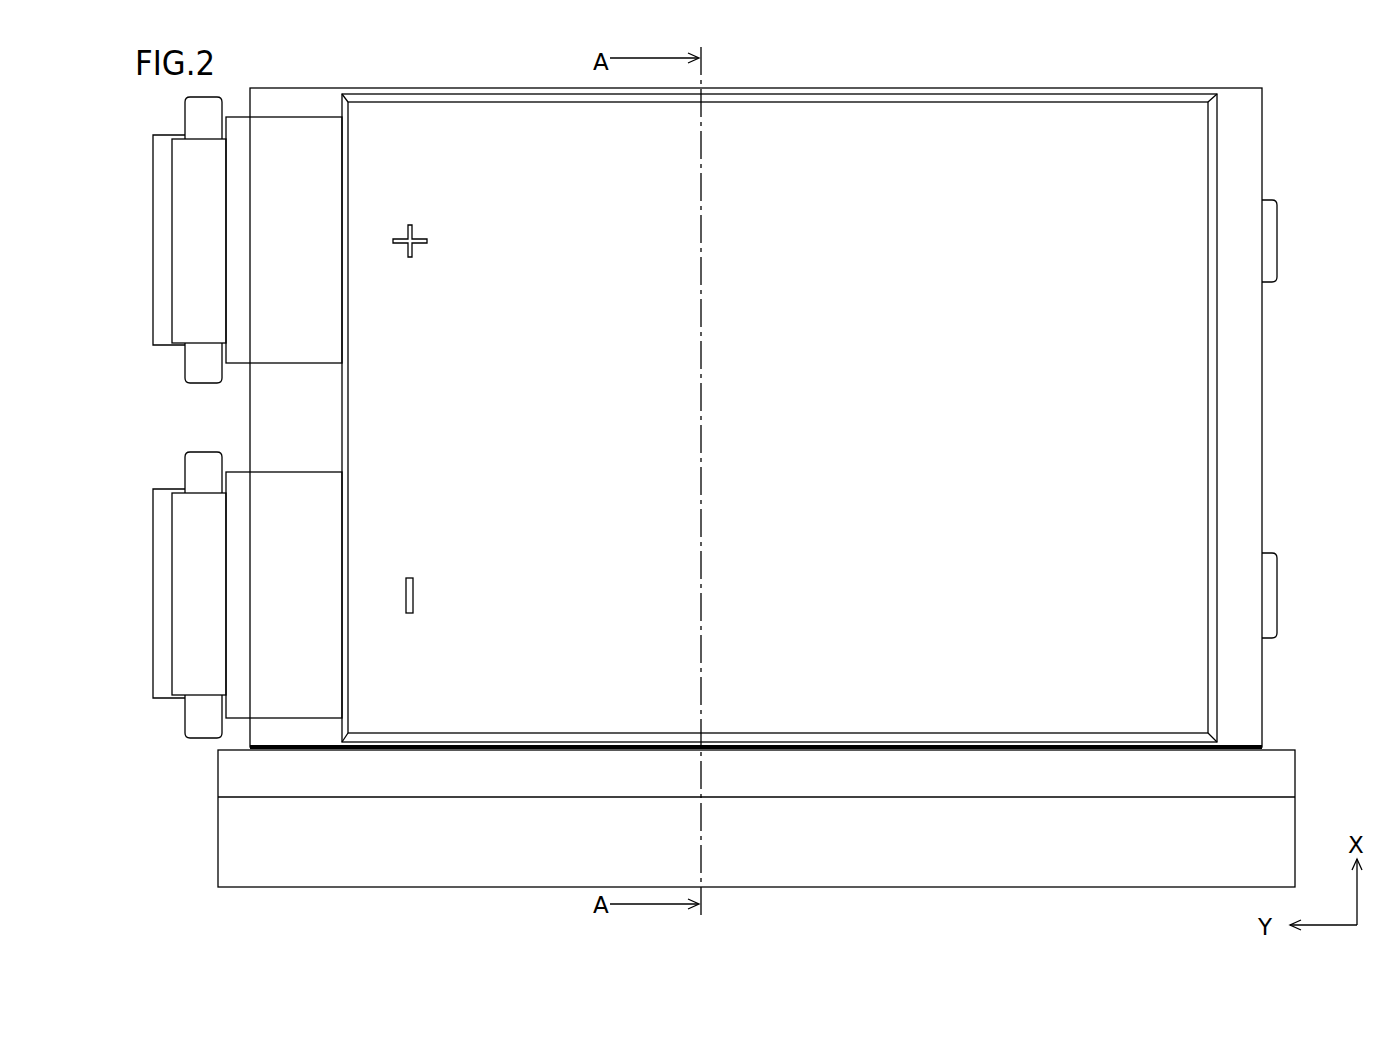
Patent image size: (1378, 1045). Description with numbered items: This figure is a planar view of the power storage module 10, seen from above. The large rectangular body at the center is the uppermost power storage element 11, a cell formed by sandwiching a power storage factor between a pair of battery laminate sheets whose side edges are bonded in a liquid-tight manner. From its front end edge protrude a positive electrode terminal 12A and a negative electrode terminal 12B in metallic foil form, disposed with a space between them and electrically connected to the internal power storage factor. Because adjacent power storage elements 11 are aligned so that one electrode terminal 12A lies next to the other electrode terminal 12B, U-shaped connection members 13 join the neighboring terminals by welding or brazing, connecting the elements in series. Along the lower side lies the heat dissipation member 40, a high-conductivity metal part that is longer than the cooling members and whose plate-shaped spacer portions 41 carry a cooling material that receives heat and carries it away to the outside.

The power storage module 10 is at (676, 431).
The power storage element 11 is at (1064, 135).
The positive electrode terminal 12A is at (188, 183).
The negative electrode terminal 12B is at (188, 545).
The connection member 13 is at (165, 308).
The heat dissipation member 40 is at (756, 850).
The spacer portion 41 is at (812, 765).